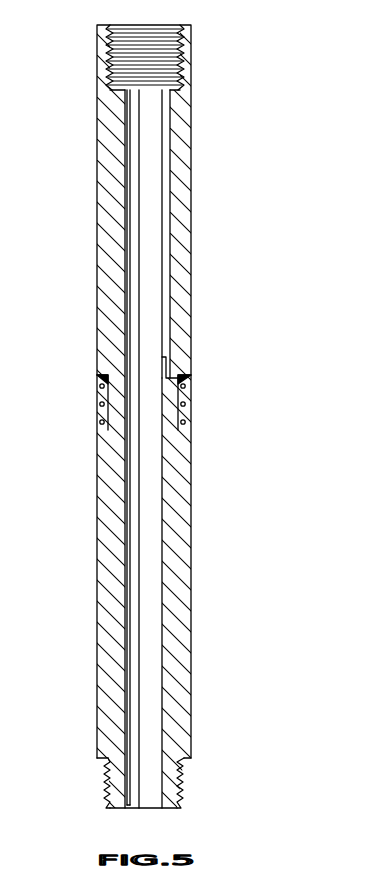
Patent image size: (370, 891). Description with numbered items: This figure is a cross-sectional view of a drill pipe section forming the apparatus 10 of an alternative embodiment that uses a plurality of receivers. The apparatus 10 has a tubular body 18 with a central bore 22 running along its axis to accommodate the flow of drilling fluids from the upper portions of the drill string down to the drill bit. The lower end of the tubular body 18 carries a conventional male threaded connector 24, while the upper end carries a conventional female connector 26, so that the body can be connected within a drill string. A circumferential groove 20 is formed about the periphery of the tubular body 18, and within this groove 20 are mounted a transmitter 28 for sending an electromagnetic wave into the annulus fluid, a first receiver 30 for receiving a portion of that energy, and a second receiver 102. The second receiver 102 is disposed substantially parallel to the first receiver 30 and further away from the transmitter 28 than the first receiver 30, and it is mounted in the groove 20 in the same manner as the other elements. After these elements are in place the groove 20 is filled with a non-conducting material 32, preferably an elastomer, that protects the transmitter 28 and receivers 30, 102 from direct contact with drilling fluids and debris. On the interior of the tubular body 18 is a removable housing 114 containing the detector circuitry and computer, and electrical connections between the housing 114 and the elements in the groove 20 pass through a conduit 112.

The apparatus 10 is at (84, 557).
The tubular body 18 is at (184, 583).
The circumferential groove 20 is at (98, 442).
The central bore 22 is at (137, 683).
The male threaded connector 24 is at (178, 794).
The female connector 26 is at (108, 65).
The transmitter 28 is at (101, 423).
The first receiver 30 is at (101, 405).
The non-conducting material 32 is at (101, 387).
The second receiver 102 is at (99, 379).
The conduit 112 is at (170, 363).
The removable housing 114 is at (167, 203).